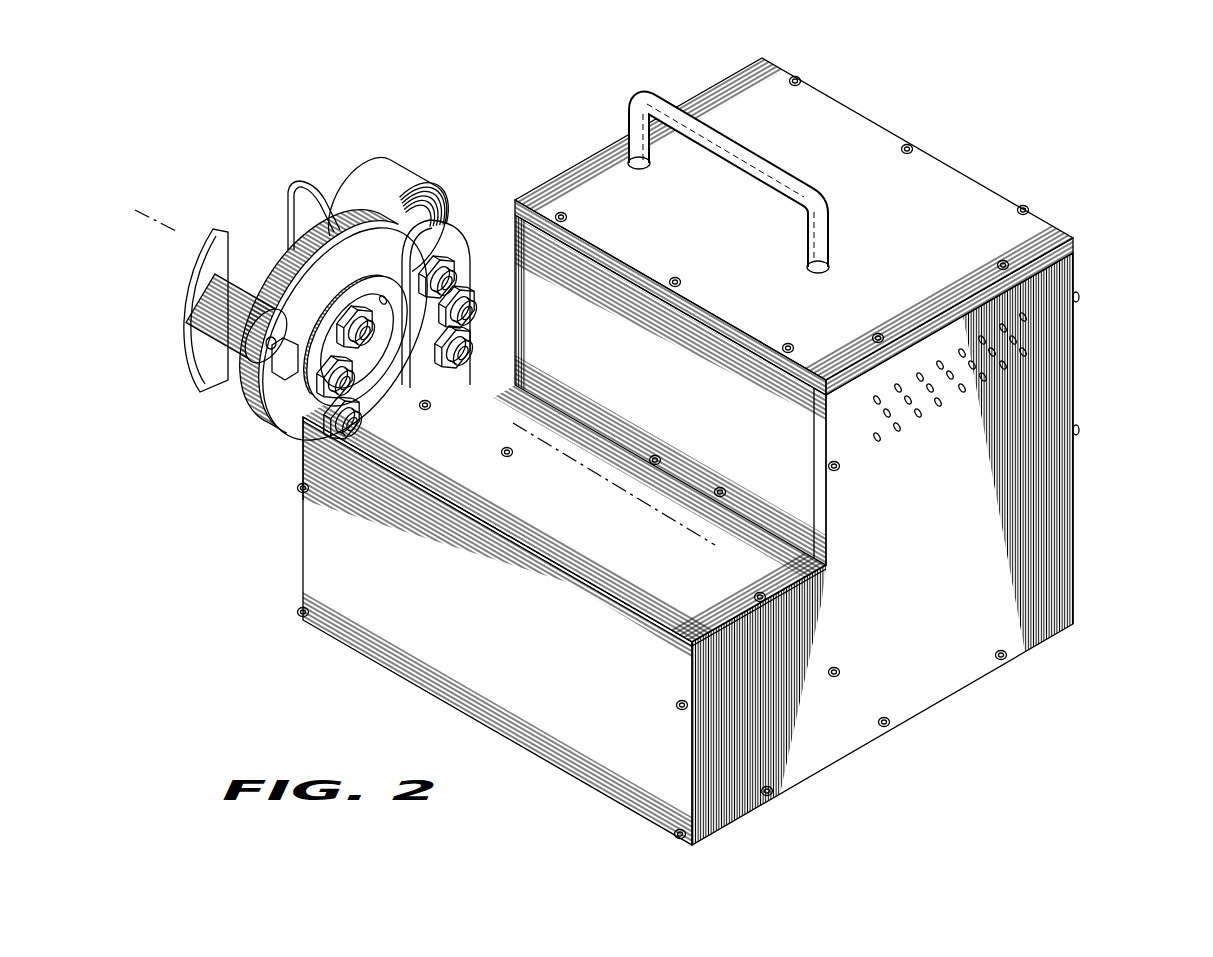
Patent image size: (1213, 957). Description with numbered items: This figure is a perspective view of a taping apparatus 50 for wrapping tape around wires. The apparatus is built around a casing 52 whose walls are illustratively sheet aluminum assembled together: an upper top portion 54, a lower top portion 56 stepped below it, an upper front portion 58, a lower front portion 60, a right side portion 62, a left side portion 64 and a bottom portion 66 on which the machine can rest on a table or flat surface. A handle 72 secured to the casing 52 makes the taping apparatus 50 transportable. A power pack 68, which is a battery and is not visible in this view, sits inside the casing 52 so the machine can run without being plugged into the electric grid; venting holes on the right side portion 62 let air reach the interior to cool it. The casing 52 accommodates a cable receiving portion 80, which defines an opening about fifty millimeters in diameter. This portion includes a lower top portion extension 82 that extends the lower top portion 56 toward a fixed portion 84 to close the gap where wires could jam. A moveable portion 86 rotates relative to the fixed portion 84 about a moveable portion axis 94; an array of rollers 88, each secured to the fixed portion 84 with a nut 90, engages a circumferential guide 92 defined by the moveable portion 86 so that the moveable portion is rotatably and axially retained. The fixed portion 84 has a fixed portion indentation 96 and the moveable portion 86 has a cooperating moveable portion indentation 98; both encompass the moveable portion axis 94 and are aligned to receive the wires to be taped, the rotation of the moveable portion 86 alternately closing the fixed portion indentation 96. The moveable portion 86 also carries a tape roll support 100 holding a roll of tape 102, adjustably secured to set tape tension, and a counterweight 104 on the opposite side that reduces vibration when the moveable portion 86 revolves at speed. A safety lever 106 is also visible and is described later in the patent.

The taping apparatus 50 is at (990, 128).
The casing 52 is at (1075, 405).
The upper top portion 54 is at (726, 226).
The lower top portion 56 is at (556, 502).
The upper front portion 58 is at (662, 374).
The lower front portion 60 is at (472, 631).
The right side portion 62 is at (900, 575).
The left side portion 64 is at (557, 156).
The bottom portion 66 is at (884, 750).
The power pack 68 is at (978, 628).
The handle 72 is at (768, 158).
The cable receiving portion 80 is at (267, 127).
The lower top portion extension 82 is at (394, 398).
The fixed portion 84 is at (300, 428).
The moveable portion 86 is at (447, 255).
The rollers 88 is at (298, 492).
The nut 90 is at (466, 243).
The circumferential guide 92 is at (332, 228).
The moveable portion axis 94 is at (617, 490).
The fixed portion indentation 96 is at (303, 500).
The moveable portion indentation 98 is at (297, 423).
The tape roll support 100 is at (413, 172).
The roll of tape 102 is at (378, 157).
The counterweight 104 is at (222, 343).
The safety lever 106 is at (222, 230).